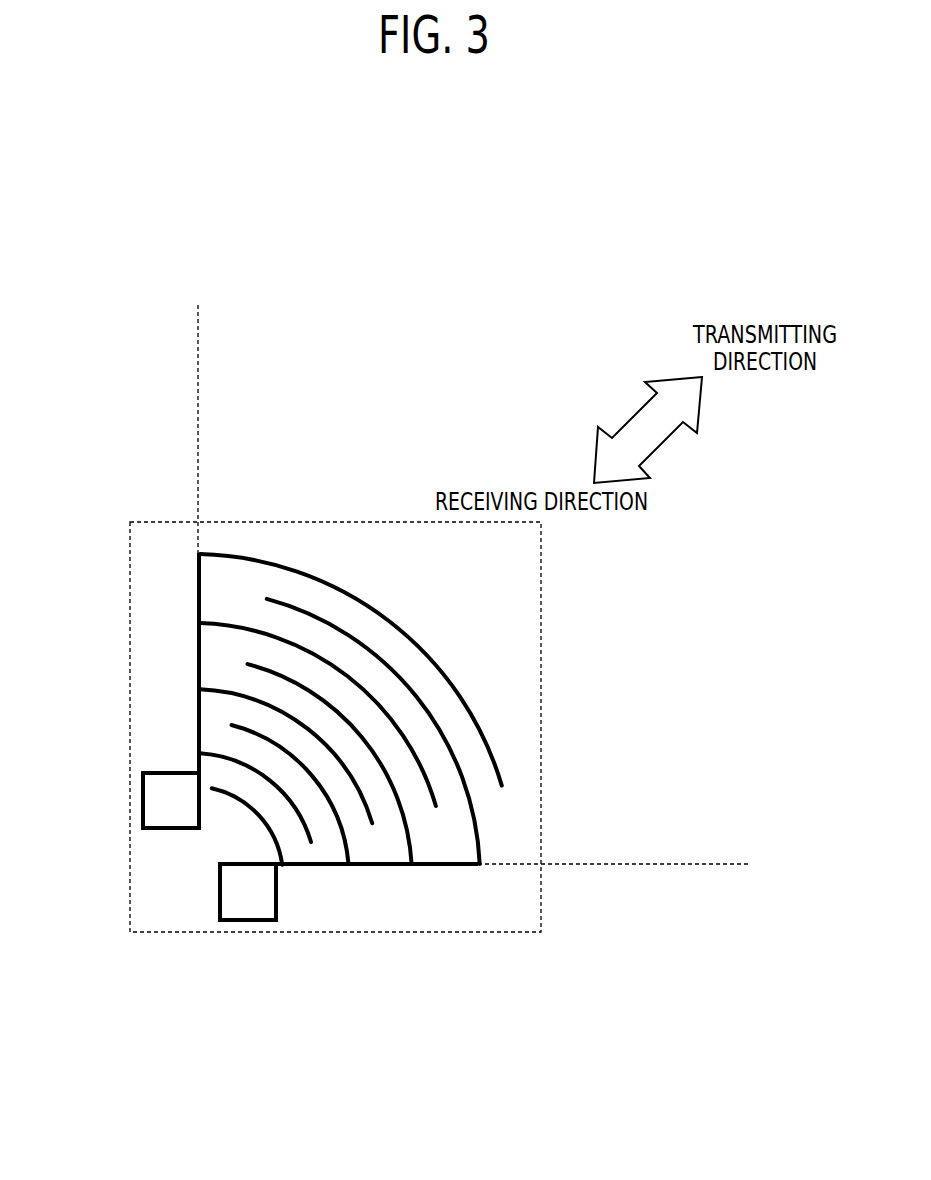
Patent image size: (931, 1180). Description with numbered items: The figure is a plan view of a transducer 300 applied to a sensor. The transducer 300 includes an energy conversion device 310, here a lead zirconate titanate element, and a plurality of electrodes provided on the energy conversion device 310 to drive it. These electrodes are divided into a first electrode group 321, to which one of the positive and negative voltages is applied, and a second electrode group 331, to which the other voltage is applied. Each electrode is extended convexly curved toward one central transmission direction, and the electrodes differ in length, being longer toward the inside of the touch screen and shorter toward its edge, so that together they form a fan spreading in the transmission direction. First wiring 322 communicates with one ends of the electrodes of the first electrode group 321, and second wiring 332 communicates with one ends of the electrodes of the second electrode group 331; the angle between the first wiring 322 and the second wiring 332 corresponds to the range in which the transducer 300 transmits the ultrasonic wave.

The transducer 300 is at (116, 442).
The energy conversion device 310 is at (129, 667).
The first electrode group 321 is at (217, 750).
The first wiring 322 is at (197, 592).
The second electrode group 331 is at (272, 827).
The second wiring 332 is at (443, 865).